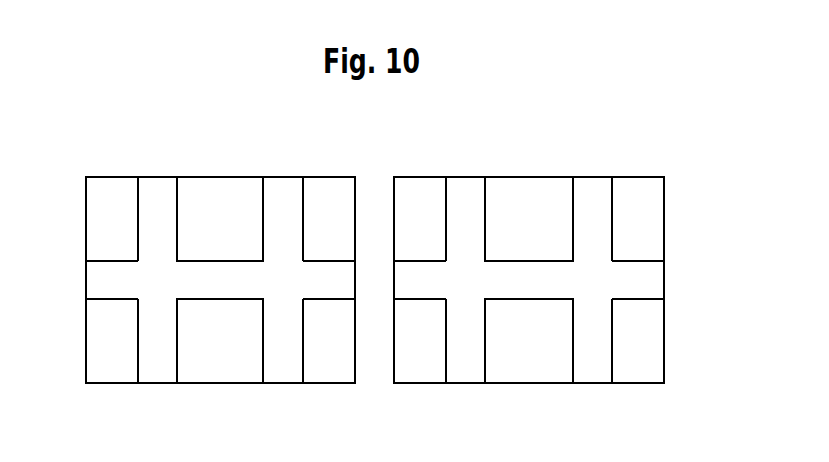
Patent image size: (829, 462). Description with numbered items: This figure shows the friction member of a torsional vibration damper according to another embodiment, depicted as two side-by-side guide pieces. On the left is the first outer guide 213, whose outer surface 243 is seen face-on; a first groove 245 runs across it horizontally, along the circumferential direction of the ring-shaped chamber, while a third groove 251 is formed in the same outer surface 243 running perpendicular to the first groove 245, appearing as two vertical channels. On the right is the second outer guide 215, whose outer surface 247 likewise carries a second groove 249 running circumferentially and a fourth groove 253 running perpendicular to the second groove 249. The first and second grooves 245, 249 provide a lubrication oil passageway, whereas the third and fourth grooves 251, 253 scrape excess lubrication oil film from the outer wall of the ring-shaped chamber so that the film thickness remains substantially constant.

The first outer guide 213 is at (113, 160).
The second outer guide 215 is at (665, 161).
The outer surface of the first outer guide 243 is at (220, 183).
The first groove 245 is at (86, 278).
The outer surface of the second outer guide 247 is at (526, 183).
The second groove 249 is at (664, 275).
The third groove 251 is at (158, 183).
The fourth groove 253 is at (464, 183).